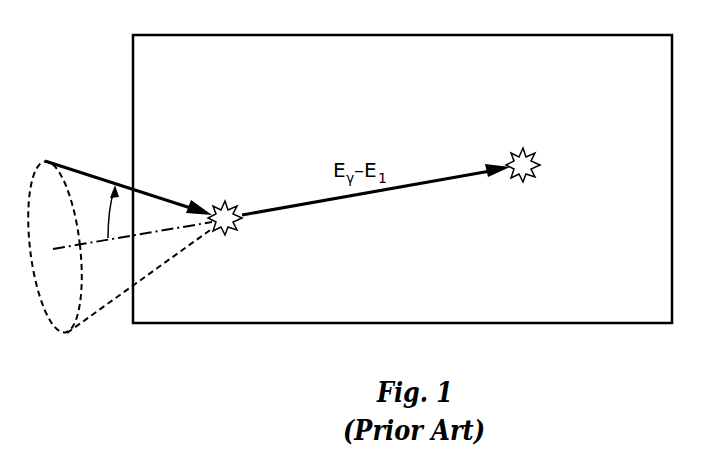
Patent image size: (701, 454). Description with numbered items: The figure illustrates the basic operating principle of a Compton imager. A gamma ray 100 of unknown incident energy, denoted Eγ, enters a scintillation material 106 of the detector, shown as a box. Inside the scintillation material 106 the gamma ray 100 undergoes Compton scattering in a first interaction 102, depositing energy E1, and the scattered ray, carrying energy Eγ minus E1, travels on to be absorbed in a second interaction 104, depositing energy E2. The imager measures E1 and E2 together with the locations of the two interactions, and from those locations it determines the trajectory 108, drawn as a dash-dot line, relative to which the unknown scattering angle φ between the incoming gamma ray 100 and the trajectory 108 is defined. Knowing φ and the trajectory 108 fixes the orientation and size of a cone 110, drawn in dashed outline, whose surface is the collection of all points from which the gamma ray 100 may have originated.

The gamma ray 100 is at (57, 163).
The first interaction 102 is at (231, 210).
The second interaction 104 is at (527, 152).
The scintillation material 106 is at (183, 71).
The trajectory 108 is at (87, 243).
The cone 110 is at (50, 317).